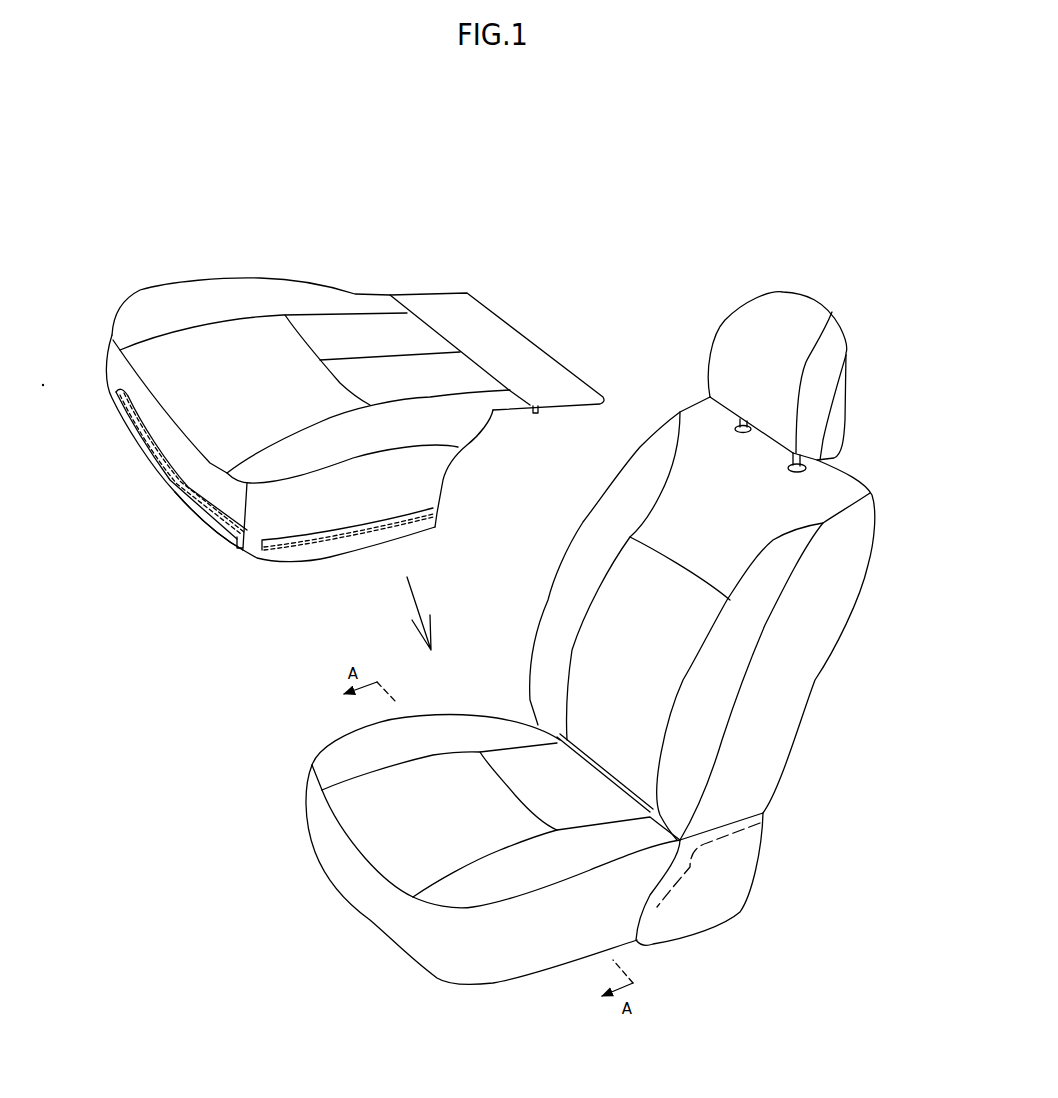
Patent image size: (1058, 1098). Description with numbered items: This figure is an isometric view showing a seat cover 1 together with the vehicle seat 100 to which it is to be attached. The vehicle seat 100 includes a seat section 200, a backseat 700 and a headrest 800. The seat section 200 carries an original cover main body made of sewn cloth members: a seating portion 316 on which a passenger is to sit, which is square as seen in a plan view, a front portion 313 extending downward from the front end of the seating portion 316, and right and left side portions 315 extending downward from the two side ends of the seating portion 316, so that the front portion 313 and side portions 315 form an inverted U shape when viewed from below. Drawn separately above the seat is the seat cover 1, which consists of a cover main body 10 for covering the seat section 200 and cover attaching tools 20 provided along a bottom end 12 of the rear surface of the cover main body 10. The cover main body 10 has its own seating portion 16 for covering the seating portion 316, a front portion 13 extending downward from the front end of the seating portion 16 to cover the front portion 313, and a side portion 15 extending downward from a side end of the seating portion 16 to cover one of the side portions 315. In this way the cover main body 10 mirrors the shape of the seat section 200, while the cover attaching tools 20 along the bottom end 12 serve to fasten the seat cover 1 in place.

The seat cover 1 is at (366, 268).
The cover main body 10 is at (268, 278).
The bottom end 12 is at (213, 533).
The front portion 13 is at (197, 487).
The left side portion 15 is at (352, 508).
The seating portion 16 is at (242, 333).
The cover attaching tools 20 is at (165, 484).
The vehicle seat 100 is at (722, 293).
The seat section 200 is at (492, 716).
The front portion 313 is at (363, 885).
The side portions 315 is at (537, 950).
The seating portion 316 is at (358, 785).
The backseat 700 is at (587, 517).
The headrest 800 is at (788, 292).